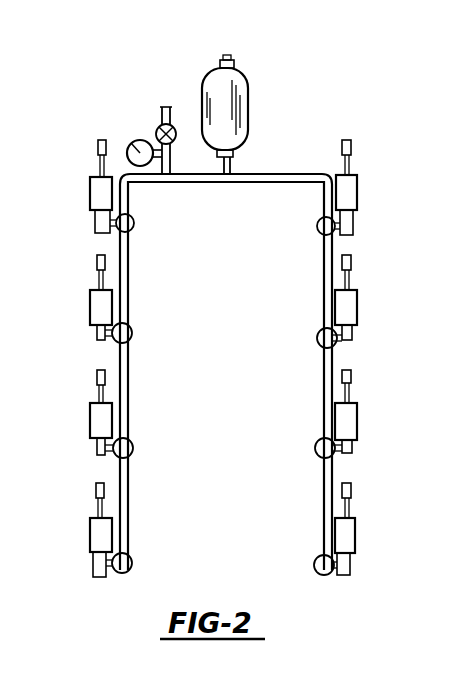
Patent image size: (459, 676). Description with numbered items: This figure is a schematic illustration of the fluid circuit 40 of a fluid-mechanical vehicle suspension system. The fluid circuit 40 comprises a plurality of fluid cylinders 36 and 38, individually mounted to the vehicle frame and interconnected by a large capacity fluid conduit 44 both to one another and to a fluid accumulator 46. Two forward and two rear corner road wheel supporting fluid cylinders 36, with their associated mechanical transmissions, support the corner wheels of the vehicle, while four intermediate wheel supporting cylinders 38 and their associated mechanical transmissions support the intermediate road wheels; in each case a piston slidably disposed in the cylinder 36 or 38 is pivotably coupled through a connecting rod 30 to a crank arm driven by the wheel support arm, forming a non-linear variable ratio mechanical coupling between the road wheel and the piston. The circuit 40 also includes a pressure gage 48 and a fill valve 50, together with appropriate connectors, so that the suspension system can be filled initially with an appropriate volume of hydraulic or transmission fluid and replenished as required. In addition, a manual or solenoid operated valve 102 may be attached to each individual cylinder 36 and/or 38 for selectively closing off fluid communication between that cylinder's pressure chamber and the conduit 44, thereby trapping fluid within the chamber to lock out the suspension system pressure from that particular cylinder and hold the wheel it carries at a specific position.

The connecting rod 30 is at (349, 280).
The corner road wheel supporting fluid cylinder 36 is at (90, 194).
The intermediate wheel supporting cylinder 38 is at (90, 311).
The fluid circuit 40 is at (131, 108).
The fluid conduit 44 is at (128, 371).
The fluid accumulator 46 is at (248, 84).
The pressure gage 48 is at (152, 166).
The fill valve 50 is at (172, 122).
The manual or solenoid operated valve 102 is at (318, 228).